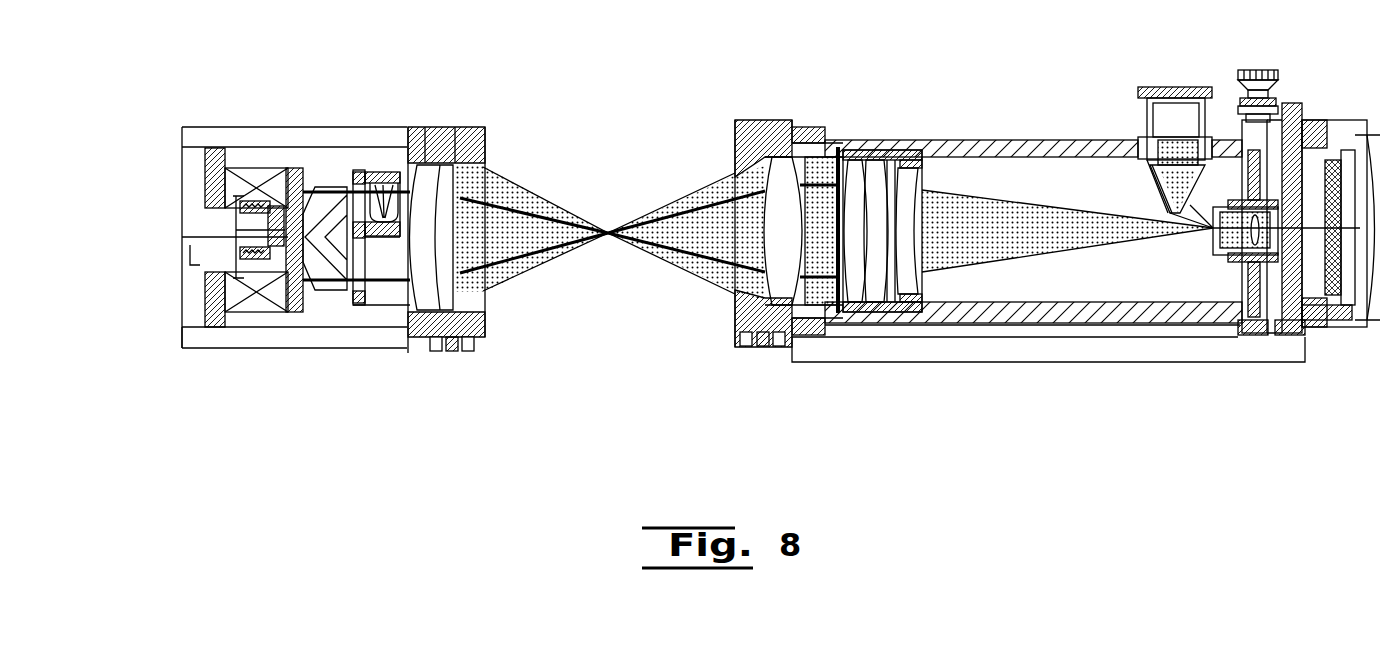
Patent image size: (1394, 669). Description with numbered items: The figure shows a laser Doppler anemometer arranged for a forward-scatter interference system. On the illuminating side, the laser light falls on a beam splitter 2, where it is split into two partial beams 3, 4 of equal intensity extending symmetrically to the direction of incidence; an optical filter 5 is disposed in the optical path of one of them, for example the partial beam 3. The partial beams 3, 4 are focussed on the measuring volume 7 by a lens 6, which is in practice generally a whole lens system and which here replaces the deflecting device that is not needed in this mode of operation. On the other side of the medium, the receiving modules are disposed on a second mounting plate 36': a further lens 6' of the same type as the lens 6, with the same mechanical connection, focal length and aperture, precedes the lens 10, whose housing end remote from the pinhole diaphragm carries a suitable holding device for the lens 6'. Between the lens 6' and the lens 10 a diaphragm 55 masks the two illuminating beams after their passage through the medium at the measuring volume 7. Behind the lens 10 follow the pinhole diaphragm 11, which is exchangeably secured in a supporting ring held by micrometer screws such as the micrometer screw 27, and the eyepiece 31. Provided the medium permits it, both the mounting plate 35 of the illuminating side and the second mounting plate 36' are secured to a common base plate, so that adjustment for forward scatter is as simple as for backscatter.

The beam splitter 2 is at (294, 220).
The partial beam 4 is at (347, 183).
The lens 6 is at (446, 221).
The further lens 6' is at (789, 216).
The diaphragm 55 is at (840, 147).
The lens 10 is at (884, 212).
The measuring volume 7 is at (610, 233).
The eyepiece 31 is at (1168, 95).
The micrometer screw 27 is at (1254, 66).
The pinhole diaphragm 11 is at (1212, 240).
The mounting plate 35 is at (276, 340).
The partial beam 3 is at (377, 290).
The optical filter 5 is at (385, 233).
The second mounting plate 36' is at (1048, 366).